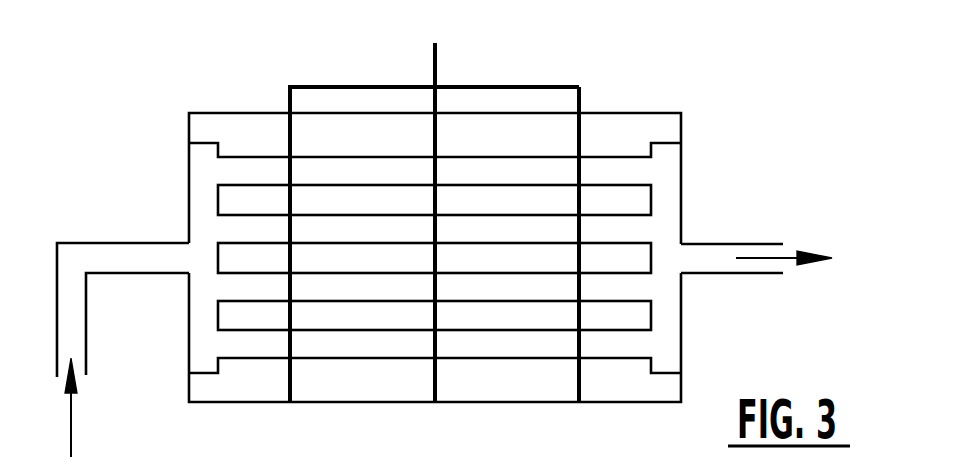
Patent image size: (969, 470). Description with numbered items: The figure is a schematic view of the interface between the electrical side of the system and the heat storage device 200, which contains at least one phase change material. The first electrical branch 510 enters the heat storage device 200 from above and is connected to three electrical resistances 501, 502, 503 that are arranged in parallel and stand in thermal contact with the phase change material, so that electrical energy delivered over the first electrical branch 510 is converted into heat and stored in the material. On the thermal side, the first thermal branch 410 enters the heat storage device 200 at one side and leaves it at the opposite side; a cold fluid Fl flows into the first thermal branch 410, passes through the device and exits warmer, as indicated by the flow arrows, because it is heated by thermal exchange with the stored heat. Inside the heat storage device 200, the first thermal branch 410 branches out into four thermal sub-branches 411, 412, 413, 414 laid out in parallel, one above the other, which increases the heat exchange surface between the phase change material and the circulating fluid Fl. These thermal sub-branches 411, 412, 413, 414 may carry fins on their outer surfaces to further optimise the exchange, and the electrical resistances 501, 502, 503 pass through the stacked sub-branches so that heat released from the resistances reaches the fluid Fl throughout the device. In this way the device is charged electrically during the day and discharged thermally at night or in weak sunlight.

The heat storage device 200 is at (189, 130).
The first thermal branch 410 is at (57, 333).
The thermal sub-branch 411 is at (233, 172).
The thermal sub-branch 412 is at (235, 230).
The thermal sub-branch 413 is at (243, 290).
The thermal sub-branch 414 is at (247, 345).
The electrical resistance 501 is at (290, 98).
The electrical resistance 502 is at (437, 98).
The electrical resistance 503 is at (580, 98).
The first electrical branch 510 is at (433, 65).
The fluid Fl is at (72, 430).